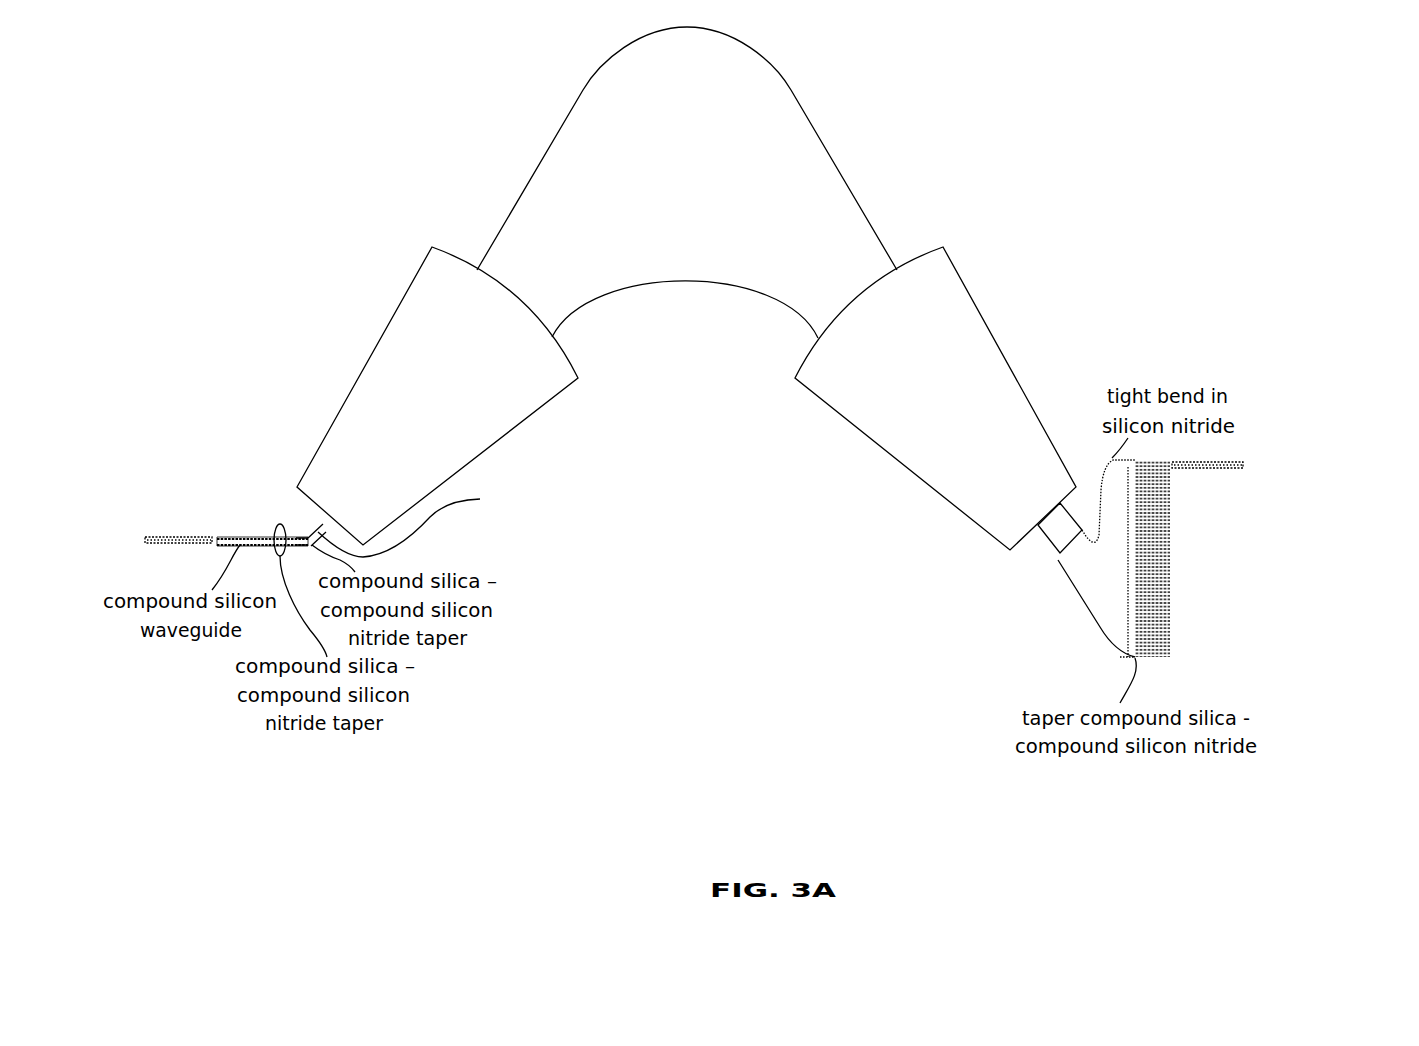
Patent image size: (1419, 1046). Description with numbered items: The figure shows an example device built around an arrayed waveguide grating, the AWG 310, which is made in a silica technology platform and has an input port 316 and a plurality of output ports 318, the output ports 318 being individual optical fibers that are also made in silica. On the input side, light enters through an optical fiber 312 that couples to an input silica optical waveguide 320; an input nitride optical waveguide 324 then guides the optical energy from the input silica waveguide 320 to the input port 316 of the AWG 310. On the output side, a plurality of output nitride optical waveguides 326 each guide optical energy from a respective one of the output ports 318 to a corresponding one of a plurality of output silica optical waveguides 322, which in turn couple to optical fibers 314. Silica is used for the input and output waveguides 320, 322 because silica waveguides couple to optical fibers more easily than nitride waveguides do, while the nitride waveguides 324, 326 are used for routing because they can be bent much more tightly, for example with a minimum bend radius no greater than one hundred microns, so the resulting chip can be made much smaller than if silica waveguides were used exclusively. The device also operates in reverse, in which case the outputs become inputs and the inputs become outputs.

The arrayed waveguide grating 310 is at (523, 182).
The optical fiber 312 is at (182, 532).
The optical fiber 314 is at (1243, 461).
The input port 316 is at (419, 525).
The output ports 318 is at (1078, 520).
The input silica optical waveguide 320 is at (243, 537).
The output silica optical waveguides 322 is at (1170, 577).
The input nitride optical waveguide 324 is at (302, 534).
The output nitride optical waveguides 326 is at (1082, 598).